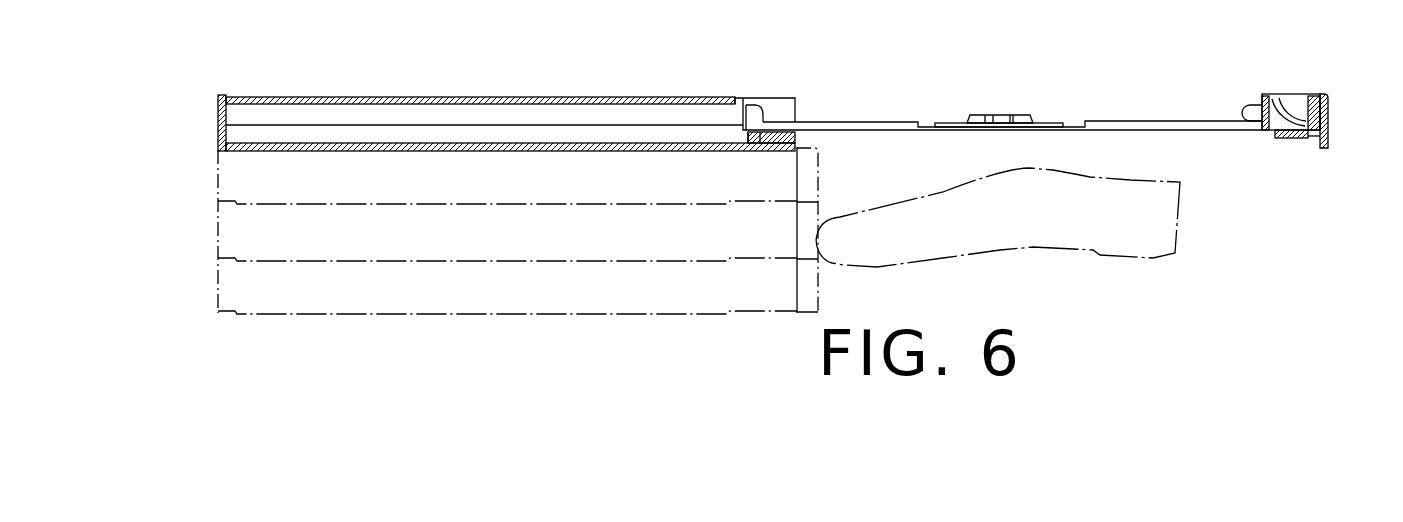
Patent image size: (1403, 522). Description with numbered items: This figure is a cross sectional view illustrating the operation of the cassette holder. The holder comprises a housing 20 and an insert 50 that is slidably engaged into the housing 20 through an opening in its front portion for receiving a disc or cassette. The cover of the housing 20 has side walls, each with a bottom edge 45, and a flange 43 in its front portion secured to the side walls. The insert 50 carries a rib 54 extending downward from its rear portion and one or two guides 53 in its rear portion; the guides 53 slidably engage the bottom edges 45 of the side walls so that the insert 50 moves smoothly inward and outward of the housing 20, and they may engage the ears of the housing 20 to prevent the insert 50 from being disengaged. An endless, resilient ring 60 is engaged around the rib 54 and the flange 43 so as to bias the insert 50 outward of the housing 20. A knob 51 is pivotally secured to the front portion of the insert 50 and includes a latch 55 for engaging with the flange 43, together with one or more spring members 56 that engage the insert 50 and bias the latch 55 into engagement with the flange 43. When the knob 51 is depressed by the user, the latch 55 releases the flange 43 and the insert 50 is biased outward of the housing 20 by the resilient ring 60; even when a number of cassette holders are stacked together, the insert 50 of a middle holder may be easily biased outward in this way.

The housing 20 is at (218, 130).
The bottom edge 45 is at (488, 127).
The flange 43 is at (770, 137).
The guides 53 is at (747, 107).
The resilient ring 60 is at (795, 138).
The rib 54 is at (752, 139).
The insert 50 is at (1138, 121).
The spring members 56 is at (1296, 97).
The knob 51 is at (1330, 127).
The latch 55 is at (1298, 139).